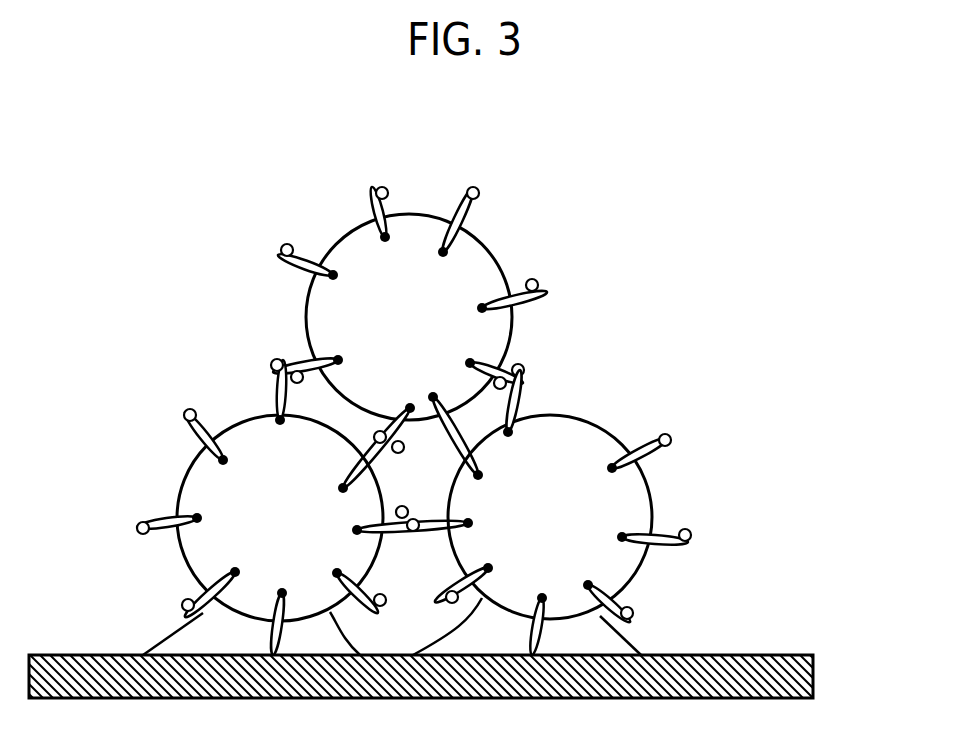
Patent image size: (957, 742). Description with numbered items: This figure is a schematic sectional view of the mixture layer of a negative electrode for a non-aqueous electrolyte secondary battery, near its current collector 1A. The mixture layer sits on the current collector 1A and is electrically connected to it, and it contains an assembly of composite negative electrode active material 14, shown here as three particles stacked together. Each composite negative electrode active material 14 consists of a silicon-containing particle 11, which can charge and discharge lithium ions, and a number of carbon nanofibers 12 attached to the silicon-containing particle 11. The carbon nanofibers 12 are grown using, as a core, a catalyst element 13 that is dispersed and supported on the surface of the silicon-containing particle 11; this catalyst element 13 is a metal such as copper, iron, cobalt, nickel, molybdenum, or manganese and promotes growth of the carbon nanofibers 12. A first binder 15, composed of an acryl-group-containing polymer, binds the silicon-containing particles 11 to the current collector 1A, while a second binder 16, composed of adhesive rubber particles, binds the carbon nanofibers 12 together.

The current collector 1A is at (800, 657).
The silicon-containing particle 11 is at (635, 502).
The carbon nanofibers 12 is at (684, 417).
The catalyst element 13 is at (510, 430).
The composite negative electrode active material 14 is at (643, 473).
The first binder 15 is at (625, 638).
The second binder 16 is at (538, 283).